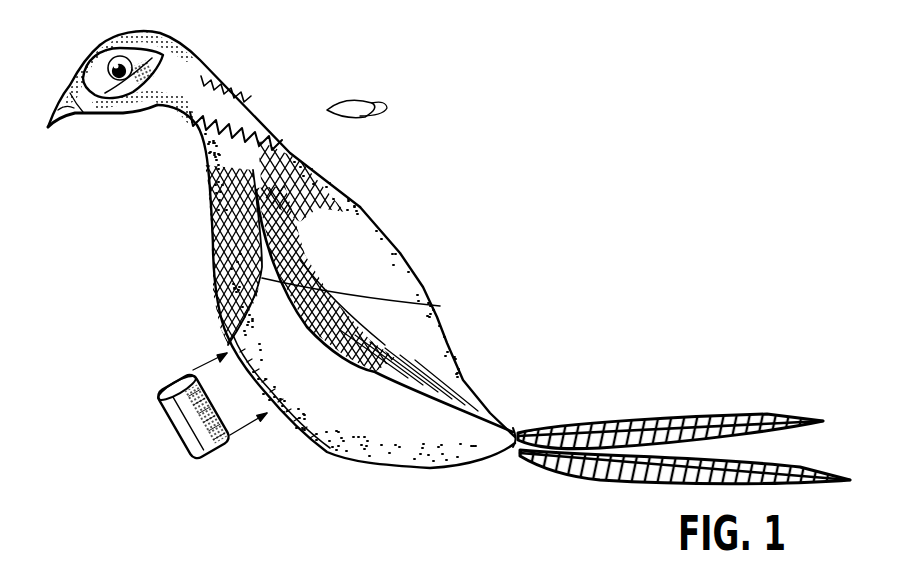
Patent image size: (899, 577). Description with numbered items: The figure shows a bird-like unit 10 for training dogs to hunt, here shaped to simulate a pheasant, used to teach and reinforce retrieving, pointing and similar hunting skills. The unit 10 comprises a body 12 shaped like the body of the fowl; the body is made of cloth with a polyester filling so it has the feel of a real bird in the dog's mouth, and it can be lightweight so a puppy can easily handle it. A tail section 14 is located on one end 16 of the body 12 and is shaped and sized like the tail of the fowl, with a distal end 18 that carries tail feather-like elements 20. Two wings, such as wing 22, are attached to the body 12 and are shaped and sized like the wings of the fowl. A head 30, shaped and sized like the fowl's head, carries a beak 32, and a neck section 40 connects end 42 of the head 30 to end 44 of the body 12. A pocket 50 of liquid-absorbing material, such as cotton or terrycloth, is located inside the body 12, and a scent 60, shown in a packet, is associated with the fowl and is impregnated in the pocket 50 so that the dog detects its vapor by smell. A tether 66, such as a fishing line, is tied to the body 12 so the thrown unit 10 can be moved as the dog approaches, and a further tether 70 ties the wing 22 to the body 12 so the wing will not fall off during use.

The unit 10 is at (394, 160).
The body 12 is at (212, 274).
The tail section 14 is at (548, 427).
The end 16 is at (513, 430).
The distal end 18 is at (813, 410).
The tail feather-like elements 20 is at (653, 425).
The wing 22 is at (433, 337).
The head 30 is at (163, 38).
The beak 32 is at (72, 115).
The neck section 40 is at (223, 105).
The end of the head 42 is at (228, 85).
The end of the body 44 is at (262, 127).
The pocket 50 is at (222, 342).
The scent 60 is at (170, 381).
The tether 66 is at (360, 97).
The further tether 70 is at (433, 306).